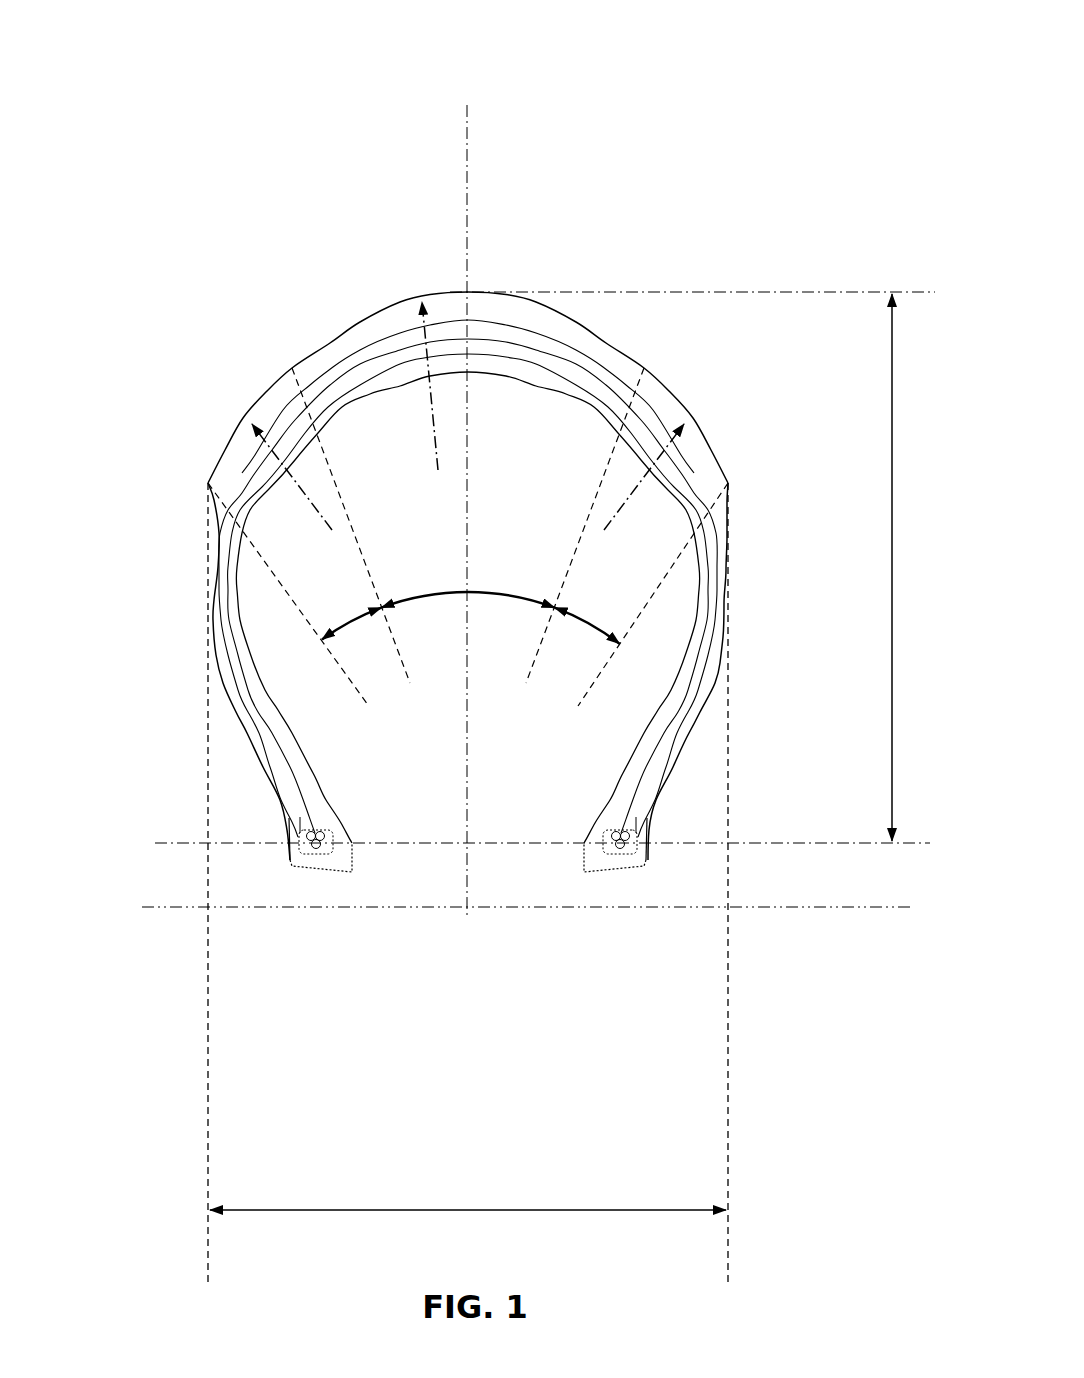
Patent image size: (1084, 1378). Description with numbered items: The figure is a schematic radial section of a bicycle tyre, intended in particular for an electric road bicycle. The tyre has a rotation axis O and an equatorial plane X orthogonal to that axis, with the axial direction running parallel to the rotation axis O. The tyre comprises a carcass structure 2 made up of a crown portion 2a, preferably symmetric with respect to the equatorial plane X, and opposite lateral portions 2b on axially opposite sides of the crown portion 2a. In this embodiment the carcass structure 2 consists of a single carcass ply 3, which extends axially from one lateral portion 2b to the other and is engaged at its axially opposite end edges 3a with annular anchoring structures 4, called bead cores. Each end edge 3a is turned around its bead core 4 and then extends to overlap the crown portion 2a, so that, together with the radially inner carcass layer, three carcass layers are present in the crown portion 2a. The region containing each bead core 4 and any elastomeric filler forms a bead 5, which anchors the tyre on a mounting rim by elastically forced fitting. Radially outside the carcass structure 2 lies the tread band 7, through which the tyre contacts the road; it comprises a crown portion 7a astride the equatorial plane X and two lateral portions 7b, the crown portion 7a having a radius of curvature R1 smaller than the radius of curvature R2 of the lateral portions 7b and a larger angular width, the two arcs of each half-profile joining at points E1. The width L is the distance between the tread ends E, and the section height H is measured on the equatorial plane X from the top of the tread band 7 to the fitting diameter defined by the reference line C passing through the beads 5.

The tread band 7 is at (377, 320).
The crown portion of the tread band 7a is at (426, 283).
The lateral portions of the tread band 7b is at (235, 378).
The equatorial plane X is at (467, 158).
The points of the profile E1 is at (292, 368).
The laterally opposite ends of the tread band E is at (207, 483).
The carcass structure 2 is at (331, 437).
The crown portion of the carcass structure 2a is at (490, 336).
The lateral portions of the carcass structure 2b is at (220, 633).
The carcass ply 3 is at (343, 400).
The end edges of the carcass ply 3a is at (276, 421).
The annular anchoring structures (bead cores) 4 is at (313, 842).
The bead 5 is at (270, 873).
The radius of curvature of the crown portion R1 is at (433, 413).
The radius of curvature of the lateral portions R2 is at (302, 492).
The reference line C is at (187, 840).
The rotation axis O is at (153, 907).
The section height H is at (912, 567).
The width (maximum cord) L is at (468, 883).